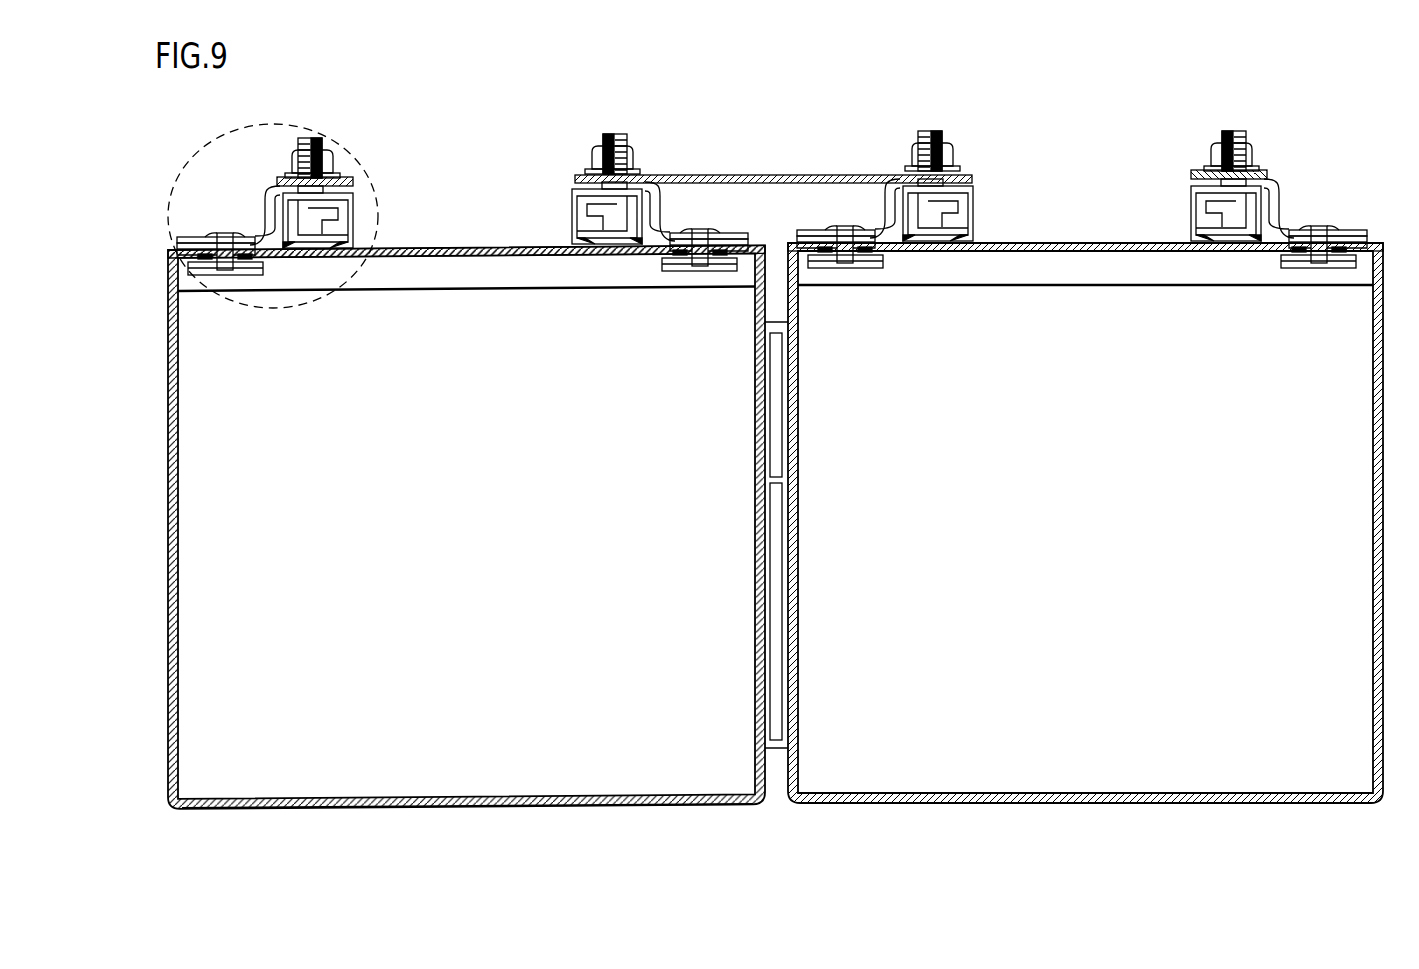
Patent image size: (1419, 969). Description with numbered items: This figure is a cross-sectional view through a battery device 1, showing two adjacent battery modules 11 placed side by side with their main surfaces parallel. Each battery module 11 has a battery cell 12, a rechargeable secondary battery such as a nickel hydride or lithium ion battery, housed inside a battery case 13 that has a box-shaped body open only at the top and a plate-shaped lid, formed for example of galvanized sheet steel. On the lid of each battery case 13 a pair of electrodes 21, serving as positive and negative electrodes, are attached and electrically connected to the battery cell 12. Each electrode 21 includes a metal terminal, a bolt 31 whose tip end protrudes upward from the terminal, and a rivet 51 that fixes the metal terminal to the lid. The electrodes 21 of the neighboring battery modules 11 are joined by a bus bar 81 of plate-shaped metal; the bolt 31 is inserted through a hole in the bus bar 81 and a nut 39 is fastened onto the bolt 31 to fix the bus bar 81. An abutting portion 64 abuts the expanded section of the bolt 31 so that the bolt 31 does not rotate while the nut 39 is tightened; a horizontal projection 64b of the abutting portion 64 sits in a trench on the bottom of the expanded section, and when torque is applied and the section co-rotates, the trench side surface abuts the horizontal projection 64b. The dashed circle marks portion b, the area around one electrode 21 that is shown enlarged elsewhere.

The battery device 1 is at (715, 845).
The battery module 11 is at (775, 566).
The battery cell 12 is at (336, 742).
The battery case 13 is at (259, 807).
The electrode 21 is at (265, 210).
The bolt 31 is at (310, 142).
The nut 39 is at (292, 160).
The rivet 51 is at (222, 240).
The abutting portion 64 is at (348, 202).
The horizontal projection 64b is at (312, 218).
The bus bar 81 is at (343, 177).
The portion b is at (332, 130).